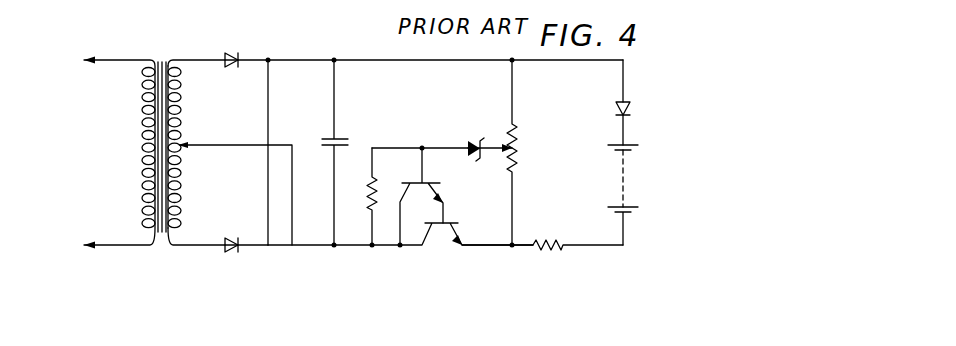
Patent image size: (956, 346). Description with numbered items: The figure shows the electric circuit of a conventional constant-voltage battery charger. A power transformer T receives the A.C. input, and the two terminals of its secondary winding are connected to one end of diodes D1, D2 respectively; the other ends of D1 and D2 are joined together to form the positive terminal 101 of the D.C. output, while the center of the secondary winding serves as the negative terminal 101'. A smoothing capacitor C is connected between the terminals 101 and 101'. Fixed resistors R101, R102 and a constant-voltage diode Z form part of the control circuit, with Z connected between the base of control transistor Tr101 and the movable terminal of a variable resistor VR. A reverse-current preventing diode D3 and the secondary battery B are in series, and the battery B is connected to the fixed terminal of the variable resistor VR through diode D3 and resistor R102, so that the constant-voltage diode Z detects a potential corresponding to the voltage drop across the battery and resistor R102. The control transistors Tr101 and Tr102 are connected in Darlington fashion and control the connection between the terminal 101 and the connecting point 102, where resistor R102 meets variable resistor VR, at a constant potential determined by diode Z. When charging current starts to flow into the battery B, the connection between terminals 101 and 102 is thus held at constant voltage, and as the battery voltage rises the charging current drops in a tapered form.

The power transformer T is at (160, 56).
The diode D1 is at (245, 46).
The diode D2 is at (243, 231).
The positive terminal 101 is at (298, 135).
The negative terminal 101' is at (320, 260).
The smoothing capacitor C is at (337, 152).
The fixed resistor R101 is at (368, 198).
The control transistor Tr101 is at (418, 187).
The control transistor Tr102 is at (441, 236).
The constant-voltage diode Z is at (484, 141).
The variable resistor VR is at (528, 152).
The connecting point 102 is at (512, 247).
The fixed resistor R102 is at (567, 263).
The reverse-current preventing diode D3 is at (641, 102).
The secondary battery B is at (629, 195).